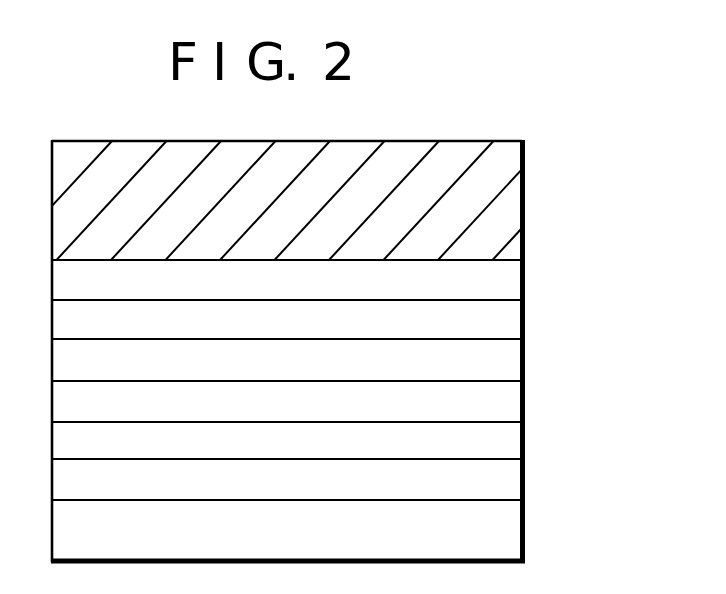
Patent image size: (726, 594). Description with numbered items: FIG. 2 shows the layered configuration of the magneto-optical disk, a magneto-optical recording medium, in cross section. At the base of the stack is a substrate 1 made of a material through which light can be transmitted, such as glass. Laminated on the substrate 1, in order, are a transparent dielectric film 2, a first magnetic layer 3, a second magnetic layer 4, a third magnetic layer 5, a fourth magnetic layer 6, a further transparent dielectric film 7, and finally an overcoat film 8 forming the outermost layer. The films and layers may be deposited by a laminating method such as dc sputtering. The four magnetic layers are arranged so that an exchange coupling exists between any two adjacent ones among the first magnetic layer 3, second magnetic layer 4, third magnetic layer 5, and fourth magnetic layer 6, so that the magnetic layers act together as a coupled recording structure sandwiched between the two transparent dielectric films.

The substrate 1 is at (511, 203).
The transparent dielectric film 2 is at (511, 287).
The first magnetic layer 3 is at (511, 330).
The second magnetic layer 4 is at (511, 372).
The third magnetic layer 5 is at (511, 410).
The fourth magnetic layer 6 is at (511, 455).
The transparent dielectric film 7 is at (511, 490).
The overcoat film 8 is at (511, 545).